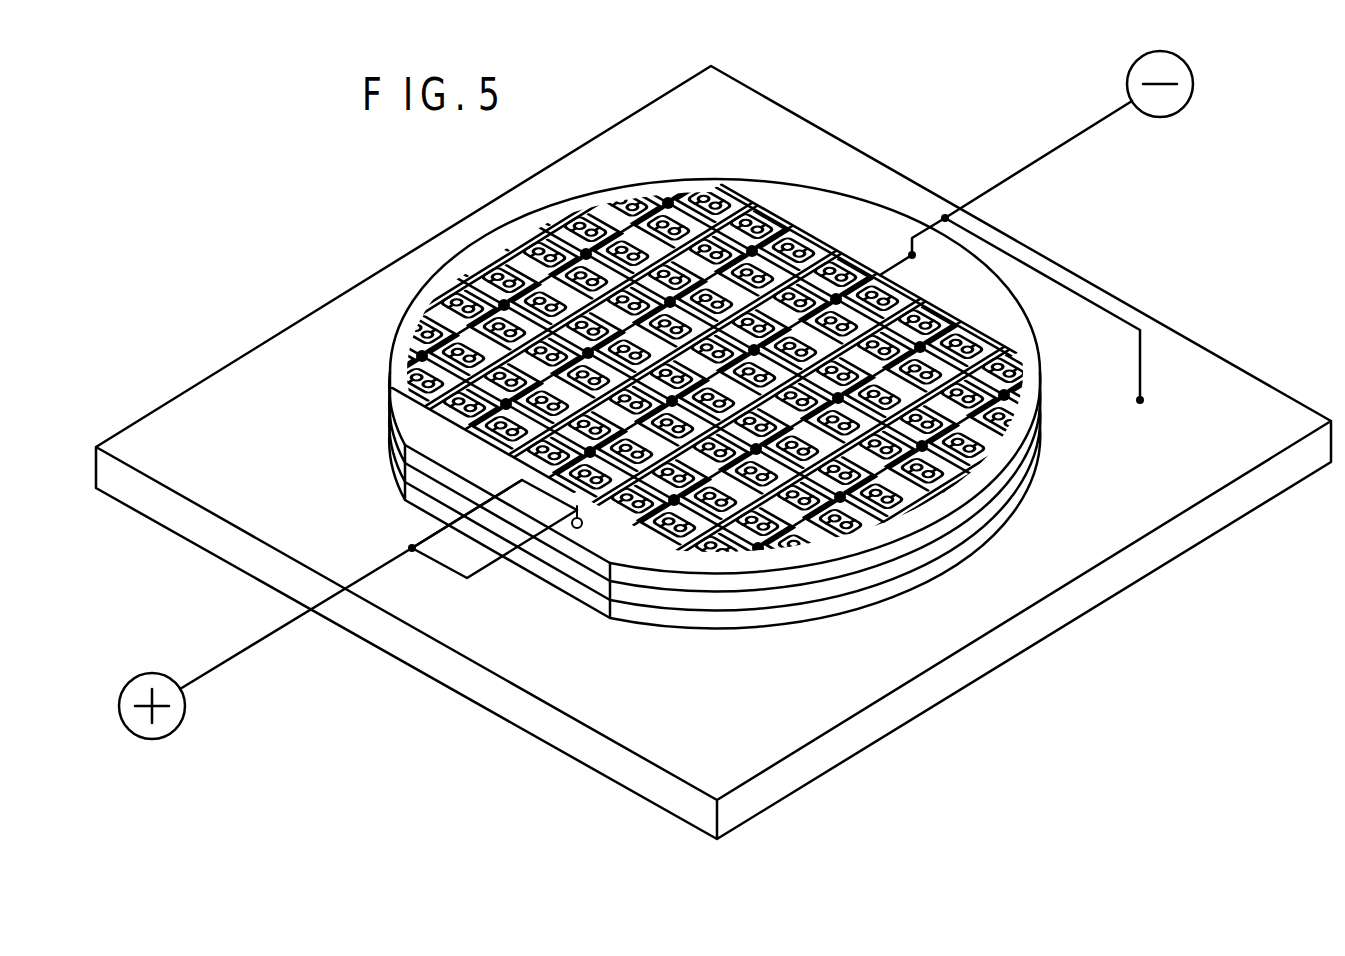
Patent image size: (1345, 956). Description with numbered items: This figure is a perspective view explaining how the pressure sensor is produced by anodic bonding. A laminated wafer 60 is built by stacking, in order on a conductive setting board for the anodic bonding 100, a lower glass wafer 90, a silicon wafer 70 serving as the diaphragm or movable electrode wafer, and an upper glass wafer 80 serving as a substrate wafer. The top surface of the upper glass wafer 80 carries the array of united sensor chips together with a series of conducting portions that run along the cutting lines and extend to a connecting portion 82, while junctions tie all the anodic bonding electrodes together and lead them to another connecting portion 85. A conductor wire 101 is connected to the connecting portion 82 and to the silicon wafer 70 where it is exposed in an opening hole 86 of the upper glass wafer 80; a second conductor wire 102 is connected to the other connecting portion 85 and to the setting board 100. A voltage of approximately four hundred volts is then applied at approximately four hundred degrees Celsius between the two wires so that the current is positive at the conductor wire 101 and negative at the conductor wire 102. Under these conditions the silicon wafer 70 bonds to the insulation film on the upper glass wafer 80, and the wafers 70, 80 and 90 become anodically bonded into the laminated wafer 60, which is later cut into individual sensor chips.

The laminated wafer 60 is at (757, 166).
The silicon wafer 70 is at (718, 596).
The upper glass wafer 80 is at (662, 582).
The connecting portion 82 is at (522, 487).
The connecting portion 85 is at (912, 255).
The opening hole 86 is at (582, 528).
The lower glass wafer 90 is at (773, 606).
The setting board for the anodic bonding 100 is at (1028, 632).
The conductor wire 101 is at (245, 655).
The conductor wire 102 is at (1072, 147).